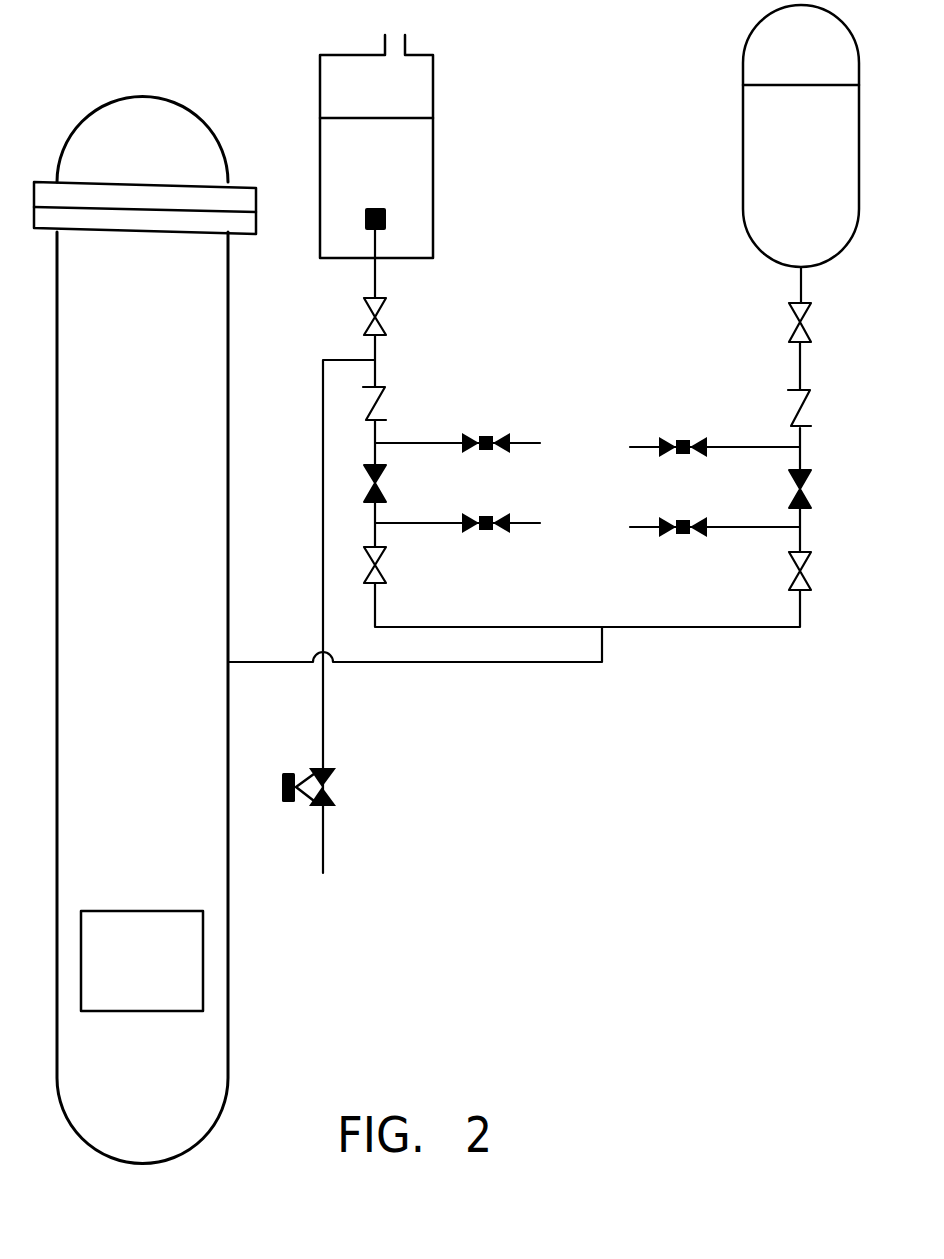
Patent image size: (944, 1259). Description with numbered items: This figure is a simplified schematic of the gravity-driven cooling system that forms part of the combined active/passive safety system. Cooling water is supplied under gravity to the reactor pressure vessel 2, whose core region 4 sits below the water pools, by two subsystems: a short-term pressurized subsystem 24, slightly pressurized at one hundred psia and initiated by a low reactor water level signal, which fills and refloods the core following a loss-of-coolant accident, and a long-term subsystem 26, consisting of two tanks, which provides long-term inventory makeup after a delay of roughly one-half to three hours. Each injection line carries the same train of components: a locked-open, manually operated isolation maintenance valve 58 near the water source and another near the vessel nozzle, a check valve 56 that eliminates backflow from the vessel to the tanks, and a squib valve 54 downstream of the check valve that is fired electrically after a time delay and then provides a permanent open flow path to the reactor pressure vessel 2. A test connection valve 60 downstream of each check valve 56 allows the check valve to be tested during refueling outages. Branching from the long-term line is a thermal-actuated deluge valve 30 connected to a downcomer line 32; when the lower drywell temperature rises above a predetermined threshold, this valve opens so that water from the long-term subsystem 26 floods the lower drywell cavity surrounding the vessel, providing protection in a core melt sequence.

The reactor pressure vessel 2 is at (242, 321).
The reactor core 4 is at (220, 948).
The short-term pressurized subsystem 24 is at (730, 171).
The long-term subsystem 26 is at (448, 185).
The thermal-actuated deluge valve 30 is at (352, 785).
The GDCS-LT downcomer line 32 is at (323, 710).
The squib valve 54 is at (386, 492).
The check valve 56 is at (386, 400).
The isolation maintenance valve 58 is at (387, 326).
The test connection valve 60 is at (500, 428).